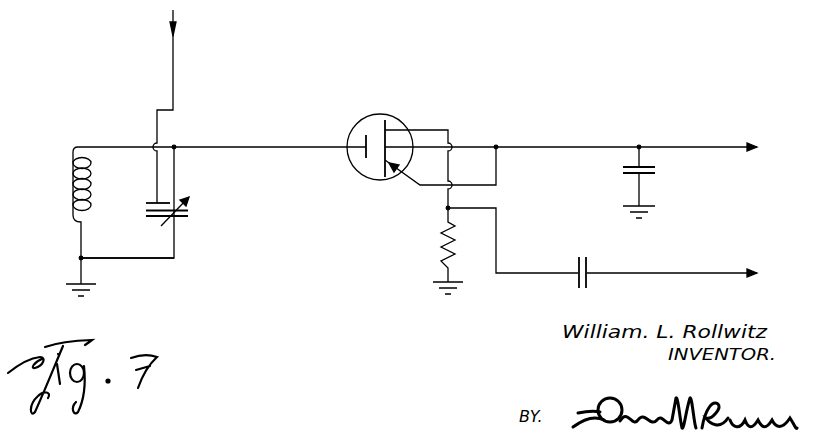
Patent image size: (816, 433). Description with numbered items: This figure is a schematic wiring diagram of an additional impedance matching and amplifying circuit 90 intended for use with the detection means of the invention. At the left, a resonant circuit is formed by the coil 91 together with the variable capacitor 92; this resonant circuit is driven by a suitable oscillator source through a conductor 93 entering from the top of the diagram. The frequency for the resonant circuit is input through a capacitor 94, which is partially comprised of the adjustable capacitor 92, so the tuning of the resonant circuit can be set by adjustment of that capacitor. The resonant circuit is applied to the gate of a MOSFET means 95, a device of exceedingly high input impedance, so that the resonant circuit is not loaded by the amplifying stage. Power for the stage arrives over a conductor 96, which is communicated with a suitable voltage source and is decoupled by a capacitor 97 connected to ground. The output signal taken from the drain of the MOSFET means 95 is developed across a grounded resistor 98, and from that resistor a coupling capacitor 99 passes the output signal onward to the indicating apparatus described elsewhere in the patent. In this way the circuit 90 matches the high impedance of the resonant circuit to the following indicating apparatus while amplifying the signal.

The impedance matching circuit 90 is at (275, 258).
The coil 91 is at (73, 192).
The variable capacitor 92 is at (190, 217).
The conductor 93 is at (174, 58).
The capacitor 94 is at (151, 201).
The MOSFET means 95 is at (362, 172).
The conductor 96 is at (684, 146).
The capacitor 97 is at (656, 173).
The grounded resistor 98 is at (442, 240).
The coupling capacitor 99 is at (590, 266).